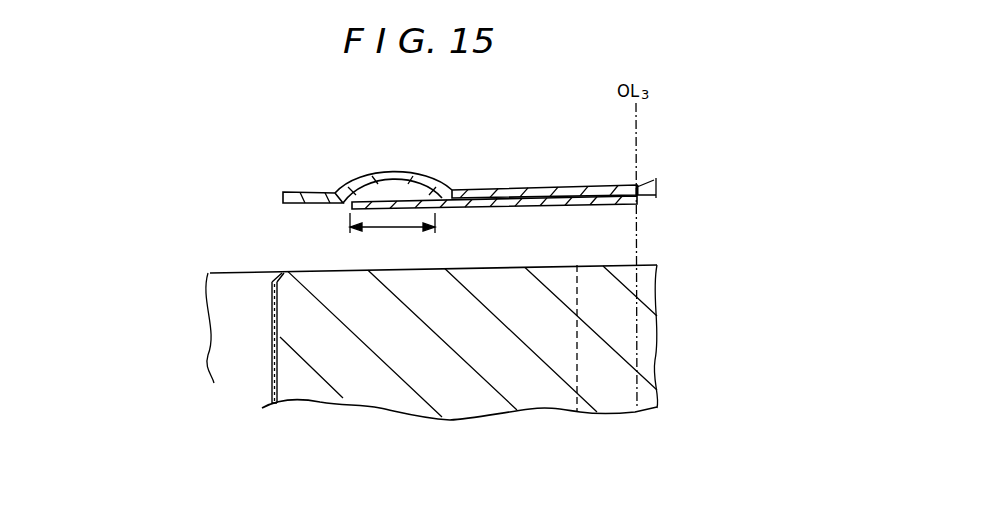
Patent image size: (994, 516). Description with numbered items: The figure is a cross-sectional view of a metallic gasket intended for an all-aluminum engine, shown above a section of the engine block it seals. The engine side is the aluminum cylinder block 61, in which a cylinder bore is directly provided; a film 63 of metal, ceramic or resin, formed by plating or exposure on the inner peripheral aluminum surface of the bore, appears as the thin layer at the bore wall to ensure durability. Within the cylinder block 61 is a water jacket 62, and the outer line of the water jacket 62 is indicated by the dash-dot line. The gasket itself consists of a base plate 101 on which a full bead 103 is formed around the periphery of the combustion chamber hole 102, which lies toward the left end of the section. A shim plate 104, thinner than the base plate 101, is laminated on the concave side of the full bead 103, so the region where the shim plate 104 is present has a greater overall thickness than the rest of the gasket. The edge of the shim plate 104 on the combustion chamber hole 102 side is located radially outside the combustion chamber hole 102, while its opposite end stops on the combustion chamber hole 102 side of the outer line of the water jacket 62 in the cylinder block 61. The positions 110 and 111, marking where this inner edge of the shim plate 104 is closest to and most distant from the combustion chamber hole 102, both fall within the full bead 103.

The cylinder block 61 is at (455, 395).
The water jacket 62 is at (614, 396).
The film 63 is at (271, 320).
The base plate 101 is at (535, 190).
The combustion chamber hole 102 is at (283, 197).
The full bead 103 is at (394, 171).
The shim plate 104 is at (502, 210).
The position closest to the combustion chamber hole 110 is at (386, 235).
The position most distant from the combustion chamber hole 111 is at (434, 235).